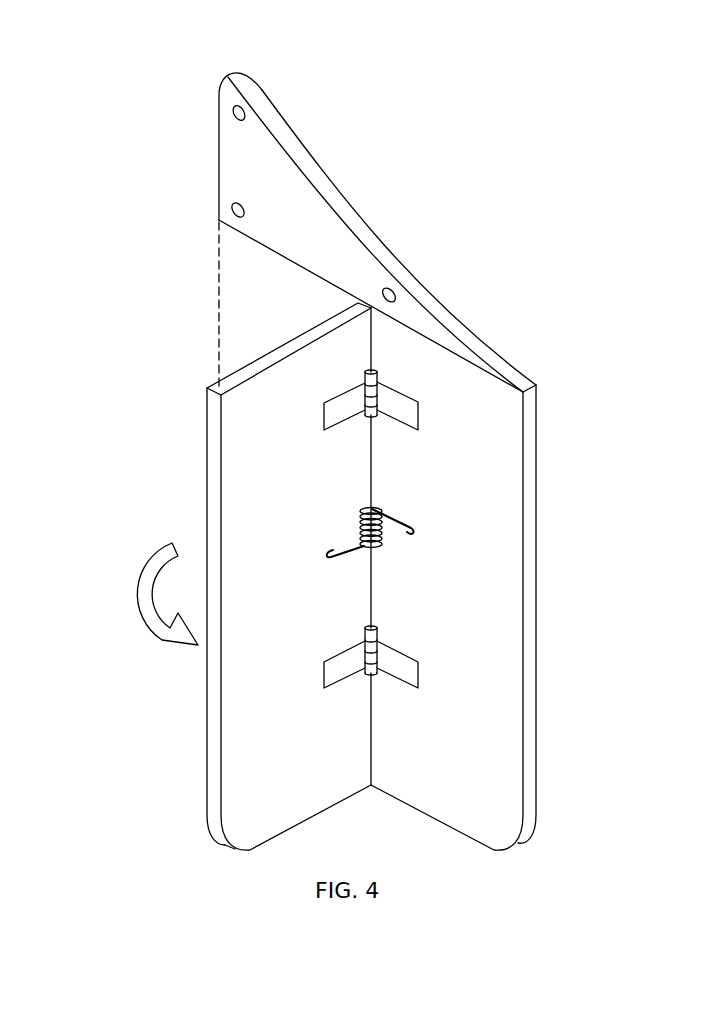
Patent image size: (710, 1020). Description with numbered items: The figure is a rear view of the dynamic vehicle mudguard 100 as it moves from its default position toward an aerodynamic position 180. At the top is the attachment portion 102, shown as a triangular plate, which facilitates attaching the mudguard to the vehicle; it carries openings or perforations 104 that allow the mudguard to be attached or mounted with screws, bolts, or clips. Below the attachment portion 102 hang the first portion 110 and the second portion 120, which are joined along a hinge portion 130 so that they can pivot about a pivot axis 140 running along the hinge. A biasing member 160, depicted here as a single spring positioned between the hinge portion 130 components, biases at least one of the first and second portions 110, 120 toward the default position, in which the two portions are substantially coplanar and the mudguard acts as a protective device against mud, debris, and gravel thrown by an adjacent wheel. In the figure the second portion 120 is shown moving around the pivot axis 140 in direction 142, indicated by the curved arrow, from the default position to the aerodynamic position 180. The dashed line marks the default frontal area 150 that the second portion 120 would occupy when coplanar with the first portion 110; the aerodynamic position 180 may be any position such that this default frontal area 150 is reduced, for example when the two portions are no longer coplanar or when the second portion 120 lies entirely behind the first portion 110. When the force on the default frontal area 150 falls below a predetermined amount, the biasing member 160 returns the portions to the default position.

The dynamic vehicle mudguard 100 is at (502, 178).
The attachment portion 102 is at (368, 237).
The openings or perforations 104 is at (240, 122).
The first portion 110 is at (537, 488).
The second portion 120 is at (207, 740).
The hinge portion 130 is at (394, 423).
The pivot axis 140 is at (372, 730).
The direction 142 is at (170, 547).
The default frontal area 150 is at (218, 270).
The biasing member 160 is at (356, 510).
The aerodynamic position 180 is at (213, 840).